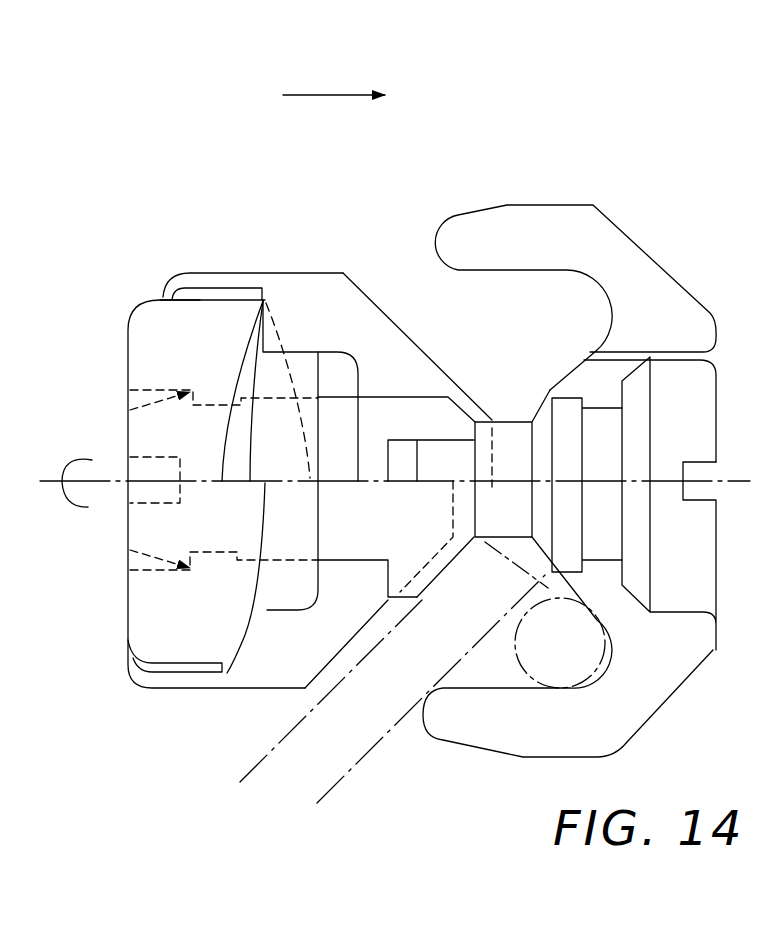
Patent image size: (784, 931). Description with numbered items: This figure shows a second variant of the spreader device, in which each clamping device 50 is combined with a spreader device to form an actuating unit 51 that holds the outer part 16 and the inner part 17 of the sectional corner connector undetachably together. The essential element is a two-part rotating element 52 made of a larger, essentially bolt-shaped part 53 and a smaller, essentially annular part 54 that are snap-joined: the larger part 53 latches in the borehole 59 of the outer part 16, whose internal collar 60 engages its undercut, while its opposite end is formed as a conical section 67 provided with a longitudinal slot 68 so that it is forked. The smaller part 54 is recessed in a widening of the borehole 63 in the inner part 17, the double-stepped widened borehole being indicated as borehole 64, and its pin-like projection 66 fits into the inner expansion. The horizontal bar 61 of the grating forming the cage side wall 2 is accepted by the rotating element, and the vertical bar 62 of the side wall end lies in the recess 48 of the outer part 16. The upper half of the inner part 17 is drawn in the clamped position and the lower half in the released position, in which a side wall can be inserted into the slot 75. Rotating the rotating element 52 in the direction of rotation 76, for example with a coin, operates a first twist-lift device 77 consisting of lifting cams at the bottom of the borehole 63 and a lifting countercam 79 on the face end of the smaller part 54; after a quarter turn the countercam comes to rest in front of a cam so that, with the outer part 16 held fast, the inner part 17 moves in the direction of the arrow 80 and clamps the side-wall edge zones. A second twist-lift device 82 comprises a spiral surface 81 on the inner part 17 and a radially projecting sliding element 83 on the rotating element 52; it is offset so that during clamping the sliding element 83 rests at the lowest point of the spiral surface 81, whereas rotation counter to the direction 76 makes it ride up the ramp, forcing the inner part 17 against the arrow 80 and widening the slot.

The arrow 80 is at (310, 95).
The actuating unit 51 is at (135, 290).
The inner part of the sectional corner connector 17 is at (307, 283).
The first twist-lift device 77 is at (277, 300).
The pin-like projection 66 is at (303, 367).
The slot 75 is at (418, 291).
The outer part of the sectional corner connector 16 is at (653, 280).
The larger bolt-shaped part 53 is at (720, 365).
The rotating element 52 is at (521, 406).
The internal collar 60 is at (603, 418).
The borehole 59 is at (678, 612).
The direction of rotation 76 is at (90, 466).
The longitudinal slot 68 is at (130, 493).
The conical section 67 is at (150, 553).
The smaller annular part 54 is at (124, 615).
The borehole 63 is at (172, 661).
The lifting countercam 79 is at (252, 604).
The double-stepped widened borehole 64 is at (348, 555).
The spiral surface 81 is at (398, 570).
The sliding element 83 is at (412, 578).
The second twist-lift device 82 is at (378, 600).
The clamping device 50 is at (276, 712).
The cage side wall 2 is at (327, 748).
The horizontal bar 61 is at (392, 740).
The recess 48 is at (508, 652).
The vertical bar 62 is at (593, 647).